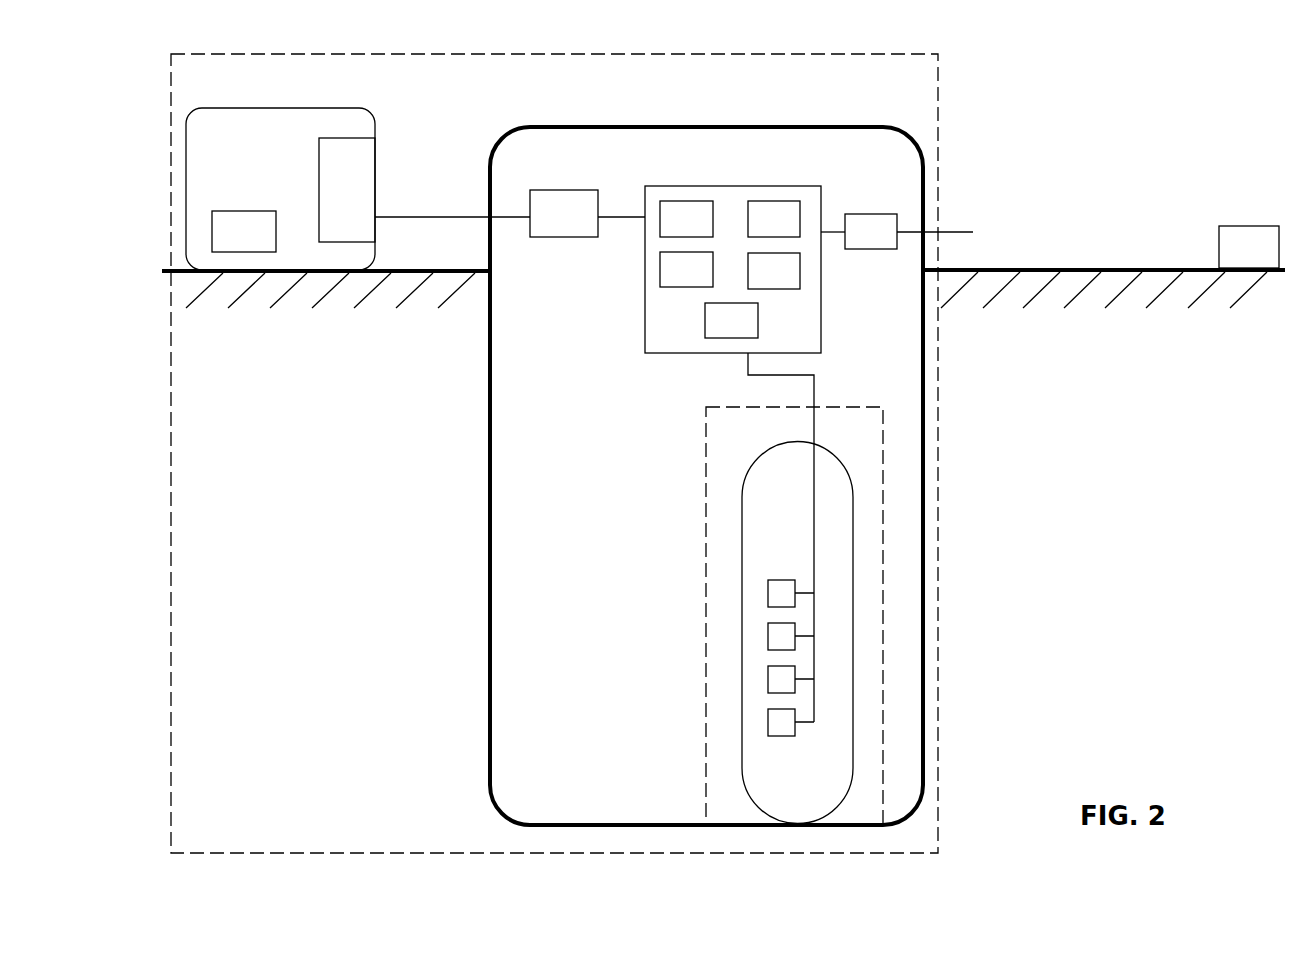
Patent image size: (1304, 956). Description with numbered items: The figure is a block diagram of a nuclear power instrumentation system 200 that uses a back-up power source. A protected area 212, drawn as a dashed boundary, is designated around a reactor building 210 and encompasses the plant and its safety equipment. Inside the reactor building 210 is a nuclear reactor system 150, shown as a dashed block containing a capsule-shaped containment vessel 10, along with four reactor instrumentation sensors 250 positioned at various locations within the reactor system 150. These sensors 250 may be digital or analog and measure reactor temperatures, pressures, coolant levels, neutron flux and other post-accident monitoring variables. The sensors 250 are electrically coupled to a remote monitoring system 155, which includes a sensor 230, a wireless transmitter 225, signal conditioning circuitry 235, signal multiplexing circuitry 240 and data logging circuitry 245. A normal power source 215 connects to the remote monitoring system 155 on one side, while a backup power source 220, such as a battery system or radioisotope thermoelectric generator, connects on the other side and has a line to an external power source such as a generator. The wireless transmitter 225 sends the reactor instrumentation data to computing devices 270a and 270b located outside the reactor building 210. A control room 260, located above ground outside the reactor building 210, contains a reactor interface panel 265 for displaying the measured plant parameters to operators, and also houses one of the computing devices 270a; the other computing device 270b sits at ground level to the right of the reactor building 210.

The nuclear power instrumentation system 200 is at (1113, 64).
The protected area 212 is at (938, 483).
The control room 260 is at (293, 107).
The reactor interface panel 265 is at (347, 190).
The computing device 270a is at (244, 231).
The computing device 270b is at (1249, 247).
The reactor building 210 is at (543, 125).
The normal power source 215 is at (564, 213).
The backup power source 220 is at (871, 231).
The remote monitoring system 155 is at (672, 187).
The sensor 230 is at (686, 219).
The wireless transmitter 225 is at (774, 219).
The signal conditioning circuitry 235 is at (686, 269).
The data logging circuitry 245 is at (774, 271).
The signal multiplexing circuitry 240 is at (731, 320).
The nuclear reactor system 150 is at (720, 407).
The containment vessel 10 is at (742, 505).
The reactor instrumentation sensors 250 is at (768, 593).